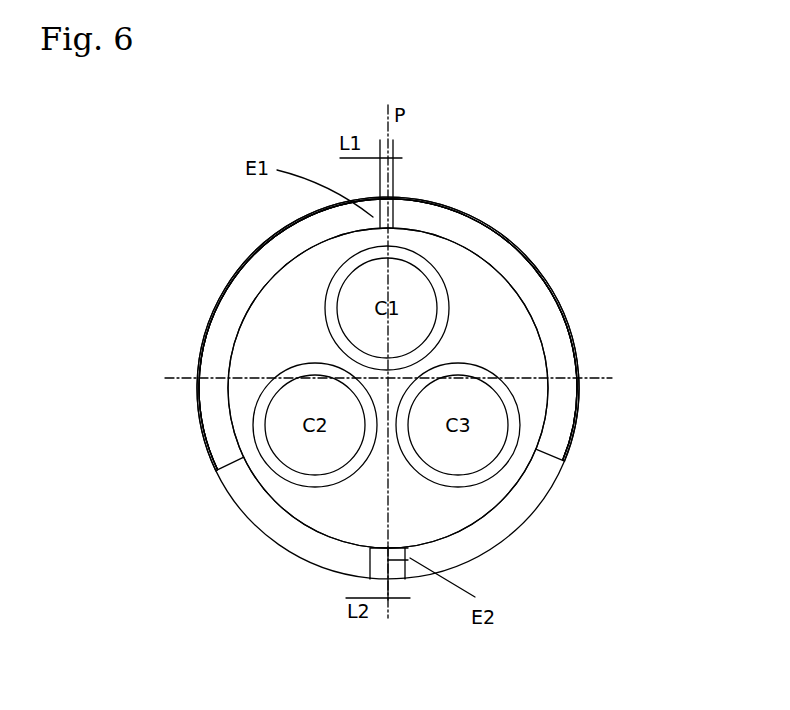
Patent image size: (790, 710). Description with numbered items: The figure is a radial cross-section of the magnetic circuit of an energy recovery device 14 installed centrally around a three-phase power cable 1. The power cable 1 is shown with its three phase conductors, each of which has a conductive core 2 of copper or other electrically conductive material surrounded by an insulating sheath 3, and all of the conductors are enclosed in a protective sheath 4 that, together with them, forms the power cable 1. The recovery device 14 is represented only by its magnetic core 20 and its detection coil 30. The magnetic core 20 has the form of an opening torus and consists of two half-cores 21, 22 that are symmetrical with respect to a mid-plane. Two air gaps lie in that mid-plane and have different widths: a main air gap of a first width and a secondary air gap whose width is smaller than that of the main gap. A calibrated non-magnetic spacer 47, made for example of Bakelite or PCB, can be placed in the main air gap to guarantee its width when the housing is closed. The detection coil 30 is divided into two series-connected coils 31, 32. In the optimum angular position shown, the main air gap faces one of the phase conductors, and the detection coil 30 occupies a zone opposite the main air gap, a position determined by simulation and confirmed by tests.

The power cable 1 is at (547, 403).
The conductive core 2 is at (407, 280).
The insulating sheath 3 is at (440, 295).
The protective sheath 4 is at (517, 332).
The recovery device 14 is at (585, 235).
The magnetic core 20 is at (185, 398).
The half-core 21 is at (560, 442).
The half-core 22 is at (225, 292).
The detection coil 30 is at (228, 513).
The coil 31 is at (527, 508).
The coil 32 is at (284, 539).
The non-magnetic spacer 47 is at (393, 200).